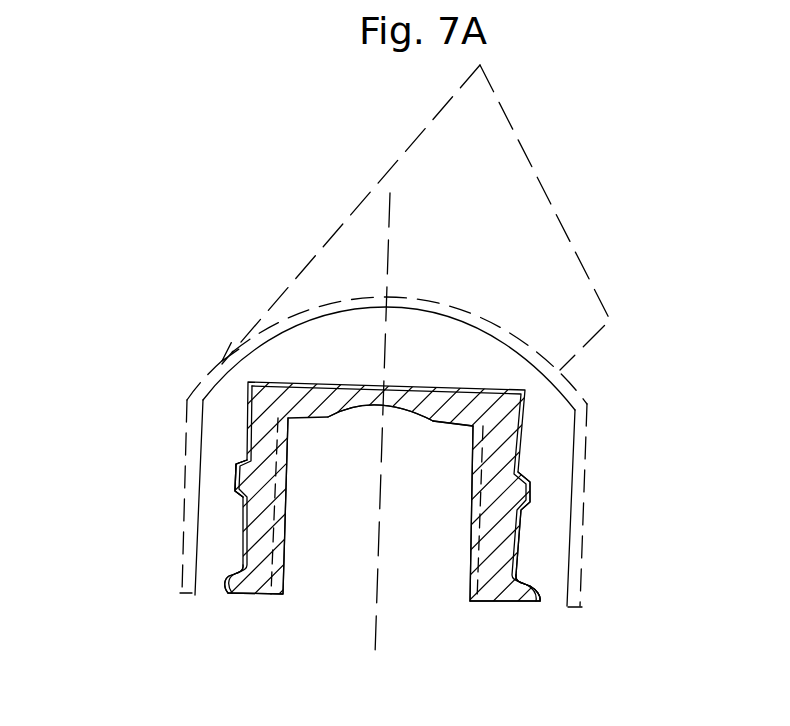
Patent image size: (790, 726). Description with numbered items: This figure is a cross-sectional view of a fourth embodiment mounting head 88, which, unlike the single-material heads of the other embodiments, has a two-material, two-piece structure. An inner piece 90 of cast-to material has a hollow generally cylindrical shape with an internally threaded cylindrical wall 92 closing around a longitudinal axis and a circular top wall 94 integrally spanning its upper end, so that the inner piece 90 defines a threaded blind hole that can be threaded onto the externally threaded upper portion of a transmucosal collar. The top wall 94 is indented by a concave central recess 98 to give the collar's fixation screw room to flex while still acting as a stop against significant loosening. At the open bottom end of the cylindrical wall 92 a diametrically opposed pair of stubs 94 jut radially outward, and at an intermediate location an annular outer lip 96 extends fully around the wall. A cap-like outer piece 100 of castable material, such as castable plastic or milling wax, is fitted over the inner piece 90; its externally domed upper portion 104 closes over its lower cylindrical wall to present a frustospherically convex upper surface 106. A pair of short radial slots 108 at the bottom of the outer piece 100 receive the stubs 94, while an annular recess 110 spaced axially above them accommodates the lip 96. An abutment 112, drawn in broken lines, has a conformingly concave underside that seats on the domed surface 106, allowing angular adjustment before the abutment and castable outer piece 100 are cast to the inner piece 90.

The mounting head 88 is at (172, 602).
The inner piece 90 is at (283, 601).
The cylindrical wall 92 is at (493, 537).
The top wall and stubs 94 is at (448, 413).
The outer lip 96 is at (245, 477).
The concave central recess 98 is at (363, 413).
The outer piece 100 is at (213, 514).
The domed upper portion 104 is at (298, 342).
The frustospherically convex upper surface 106 is at (485, 327).
The radial slots 108 is at (535, 590).
The annular slot or recess 110 is at (245, 477).
The abutment 112 is at (532, 152).